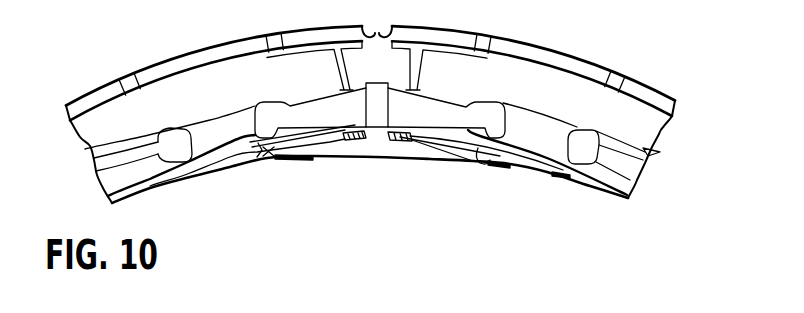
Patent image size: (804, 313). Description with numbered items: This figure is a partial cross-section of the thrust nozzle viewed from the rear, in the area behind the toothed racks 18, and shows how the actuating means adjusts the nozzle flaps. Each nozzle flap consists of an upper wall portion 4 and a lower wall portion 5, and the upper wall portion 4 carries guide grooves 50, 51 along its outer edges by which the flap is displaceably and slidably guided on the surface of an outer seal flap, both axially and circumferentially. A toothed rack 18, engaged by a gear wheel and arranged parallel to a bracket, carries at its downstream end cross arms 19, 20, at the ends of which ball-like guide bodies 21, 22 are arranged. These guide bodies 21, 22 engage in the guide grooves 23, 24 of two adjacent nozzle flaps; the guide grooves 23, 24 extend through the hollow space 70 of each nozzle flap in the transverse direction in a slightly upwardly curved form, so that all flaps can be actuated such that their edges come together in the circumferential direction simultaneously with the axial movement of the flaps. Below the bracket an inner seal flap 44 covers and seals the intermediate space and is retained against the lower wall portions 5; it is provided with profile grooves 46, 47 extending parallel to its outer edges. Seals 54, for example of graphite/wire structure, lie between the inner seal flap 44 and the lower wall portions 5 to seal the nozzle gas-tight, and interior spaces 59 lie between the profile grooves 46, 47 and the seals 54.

The upper wall portion 4 is at (160, 63).
The guide groove 50 is at (370, 26).
The guide groove 51 is at (389, 26).
The hollow space 70 is at (589, 120).
The toothed rack 18 is at (380, 83).
The guide groove 23 is at (288, 108).
The guide groove 24 is at (127, 156).
The lower wall portion 5 is at (178, 182).
The seal 54 is at (392, 142).
The interior space 59 is at (320, 148).
The cross arm 20 is at (306, 158).
The inner seal flap 44 is at (291, 160).
The profile groove 46 is at (266, 160).
The ball-like guide body 22 is at (262, 160).
The cross arm 19 is at (448, 150).
The ball-like guide body 21 is at (463, 165).
The profile groove 47 is at (482, 163).